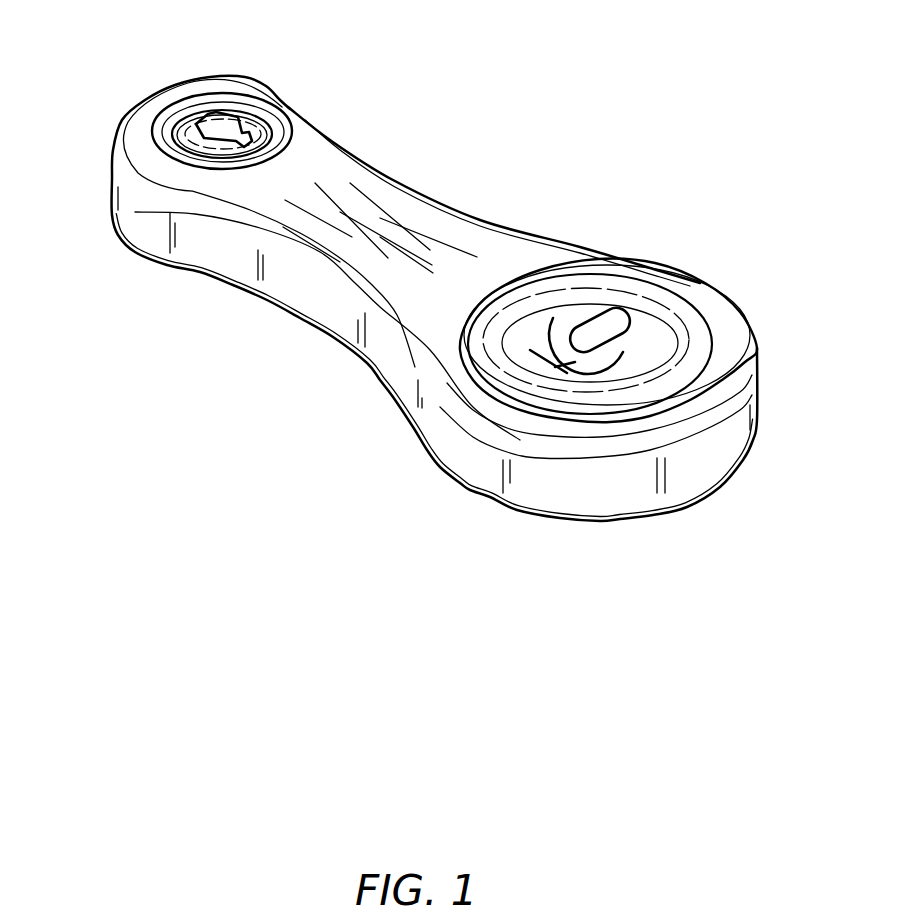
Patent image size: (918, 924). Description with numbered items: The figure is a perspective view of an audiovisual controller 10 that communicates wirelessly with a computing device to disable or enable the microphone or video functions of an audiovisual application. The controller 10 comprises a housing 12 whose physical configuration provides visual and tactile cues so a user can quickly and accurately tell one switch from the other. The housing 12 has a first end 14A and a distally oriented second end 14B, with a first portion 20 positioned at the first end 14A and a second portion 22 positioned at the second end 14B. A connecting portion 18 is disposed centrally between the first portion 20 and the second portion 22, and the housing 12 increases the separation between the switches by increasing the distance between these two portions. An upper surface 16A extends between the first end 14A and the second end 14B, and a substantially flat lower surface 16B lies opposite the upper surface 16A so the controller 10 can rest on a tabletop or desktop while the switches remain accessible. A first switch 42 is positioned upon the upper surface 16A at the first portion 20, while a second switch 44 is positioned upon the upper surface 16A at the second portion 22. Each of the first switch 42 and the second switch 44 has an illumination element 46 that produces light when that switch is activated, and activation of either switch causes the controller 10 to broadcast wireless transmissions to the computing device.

The audiovisual controller 10 is at (359, 494).
The housing 12 is at (480, 220).
The first end 14A is at (720, 480).
The second end 14B is at (127, 117).
The upper surface 16A is at (460, 304).
The lower surface 16B is at (393, 397).
The connecting portion 18 is at (317, 293).
The first portion 20 is at (716, 447).
The second portion 22 is at (143, 213).
The first switch 42 is at (646, 318).
The second switch 44 is at (248, 118).
The illumination element 46 is at (233, 97).